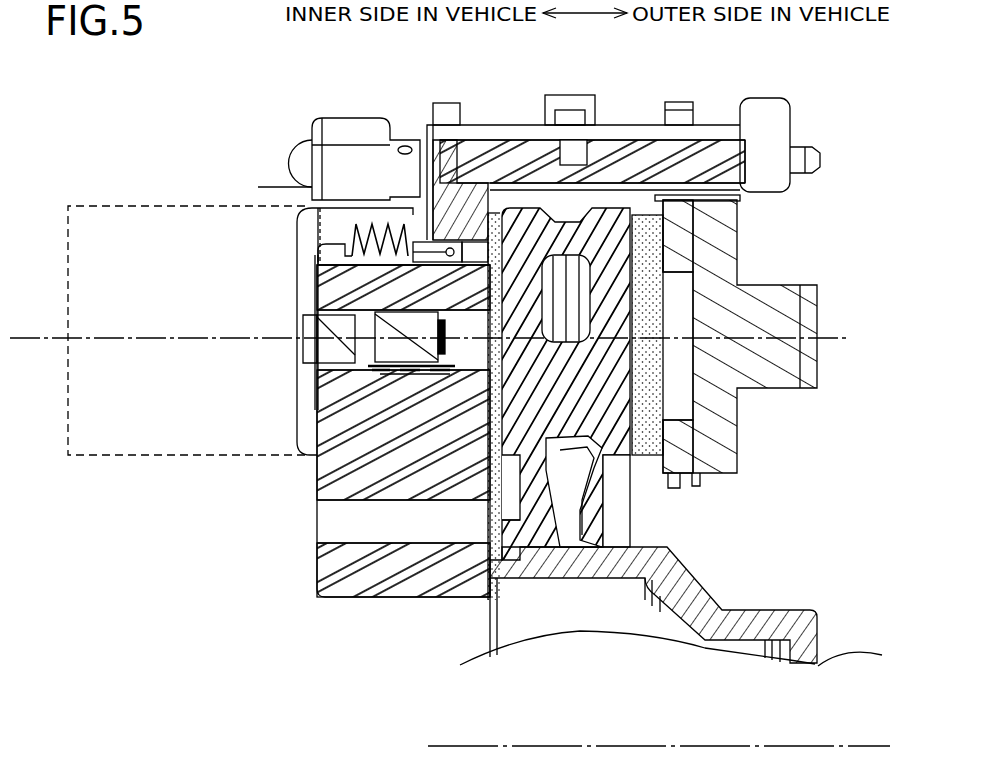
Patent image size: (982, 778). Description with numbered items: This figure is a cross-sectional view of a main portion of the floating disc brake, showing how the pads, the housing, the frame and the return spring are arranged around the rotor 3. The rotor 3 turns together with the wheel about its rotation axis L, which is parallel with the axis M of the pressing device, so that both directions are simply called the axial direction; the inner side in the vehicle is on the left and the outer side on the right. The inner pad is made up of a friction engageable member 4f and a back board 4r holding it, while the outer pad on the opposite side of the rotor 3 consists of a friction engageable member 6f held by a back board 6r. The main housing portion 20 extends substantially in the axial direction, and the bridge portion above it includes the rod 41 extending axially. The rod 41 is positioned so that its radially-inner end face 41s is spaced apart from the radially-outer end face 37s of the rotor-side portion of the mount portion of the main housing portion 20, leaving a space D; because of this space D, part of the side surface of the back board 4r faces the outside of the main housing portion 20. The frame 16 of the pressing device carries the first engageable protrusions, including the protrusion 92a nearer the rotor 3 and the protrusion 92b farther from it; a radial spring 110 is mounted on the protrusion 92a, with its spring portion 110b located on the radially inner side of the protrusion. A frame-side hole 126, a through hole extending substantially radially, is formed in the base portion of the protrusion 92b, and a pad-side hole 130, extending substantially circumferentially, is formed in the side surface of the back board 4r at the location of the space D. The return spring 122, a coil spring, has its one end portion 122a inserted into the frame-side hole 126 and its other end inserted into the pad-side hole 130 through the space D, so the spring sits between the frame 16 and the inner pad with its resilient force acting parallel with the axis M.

The main housing portion 20 is at (345, 132).
The return spring 122 is at (371, 206).
The pad-side hole 130 is at (427, 238).
The back board 4r is at (458, 240).
The radially-inner end face 41s is at (475, 238).
The friction engageable member 4f is at (487, 238).
The rod 41 is at (620, 150).
The friction engageable member 6f is at (645, 220).
The back board 6r is at (675, 212).
The space D is at (495, 250).
The axis of the pressing device M is at (439, 339).
The frame 16 is at (782, 362).
The frame-side hole 126 is at (322, 300).
The one end portion 122a is at (317, 343).
The protrusion 92b is at (337, 347).
The protrusion 92a is at (400, 348).
The radial spring 110 is at (315, 485).
The radially-outer end face 37s is at (428, 375).
The spring portion 110b is at (411, 394).
The rotor 3 is at (772, 615).
The rotation axis L is at (672, 750).